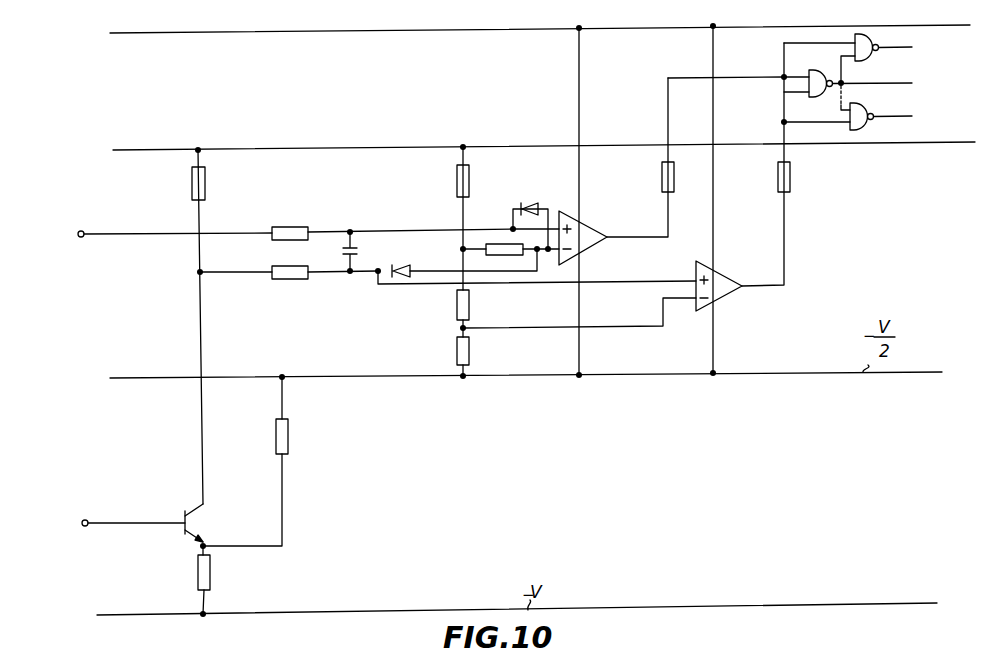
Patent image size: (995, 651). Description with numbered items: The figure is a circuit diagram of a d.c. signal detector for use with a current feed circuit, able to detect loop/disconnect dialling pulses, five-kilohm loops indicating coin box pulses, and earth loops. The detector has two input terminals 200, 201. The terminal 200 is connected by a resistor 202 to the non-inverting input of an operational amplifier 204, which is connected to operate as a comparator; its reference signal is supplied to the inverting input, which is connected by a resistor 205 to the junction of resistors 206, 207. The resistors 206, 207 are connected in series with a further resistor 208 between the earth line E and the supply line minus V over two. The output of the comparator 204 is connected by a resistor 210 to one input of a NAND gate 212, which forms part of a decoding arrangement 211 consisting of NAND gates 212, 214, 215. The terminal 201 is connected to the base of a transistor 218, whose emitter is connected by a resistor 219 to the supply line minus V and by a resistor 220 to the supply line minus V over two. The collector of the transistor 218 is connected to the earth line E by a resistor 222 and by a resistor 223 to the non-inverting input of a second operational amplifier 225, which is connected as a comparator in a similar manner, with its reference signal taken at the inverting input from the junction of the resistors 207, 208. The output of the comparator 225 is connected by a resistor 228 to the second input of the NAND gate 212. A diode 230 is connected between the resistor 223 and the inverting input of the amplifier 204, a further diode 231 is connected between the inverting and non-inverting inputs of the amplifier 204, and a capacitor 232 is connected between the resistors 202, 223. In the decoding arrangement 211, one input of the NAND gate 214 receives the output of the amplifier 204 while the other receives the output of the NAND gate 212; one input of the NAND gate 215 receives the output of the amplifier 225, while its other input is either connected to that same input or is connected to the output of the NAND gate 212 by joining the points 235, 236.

The input terminal 200 is at (82, 238).
The input terminal 201 is at (86, 527).
The resistor 202 is at (291, 227).
The operational amplifier 204 is at (587, 222).
The resistor 205 is at (504, 243).
The resistor 206 is at (472, 181).
The resistor 207 is at (457, 308).
The resistor 208 is at (472, 352).
The resistor 210 is at (661, 176).
The decoding arrangement 211 is at (899, 76).
The NAND gate 212 is at (829, 70).
The NAND gate 214 is at (878, 42).
The NAND gate 215 is at (877, 120).
The transistor 218 is at (183, 515).
The resistor 219 is at (210, 572).
The resistor 220 is at (290, 437).
The resistor 222 is at (192, 182).
The resistor 223 is at (290, 280).
The operational amplifier 225 is at (723, 275).
The resistor 228 is at (777, 176).
The diode 230 is at (404, 268).
The diode 231 is at (538, 205).
The capacitor 232 is at (356, 251).
The point 235 is at (845, 88).
The point 236 is at (840, 100).
The earth line E is at (943, 143).